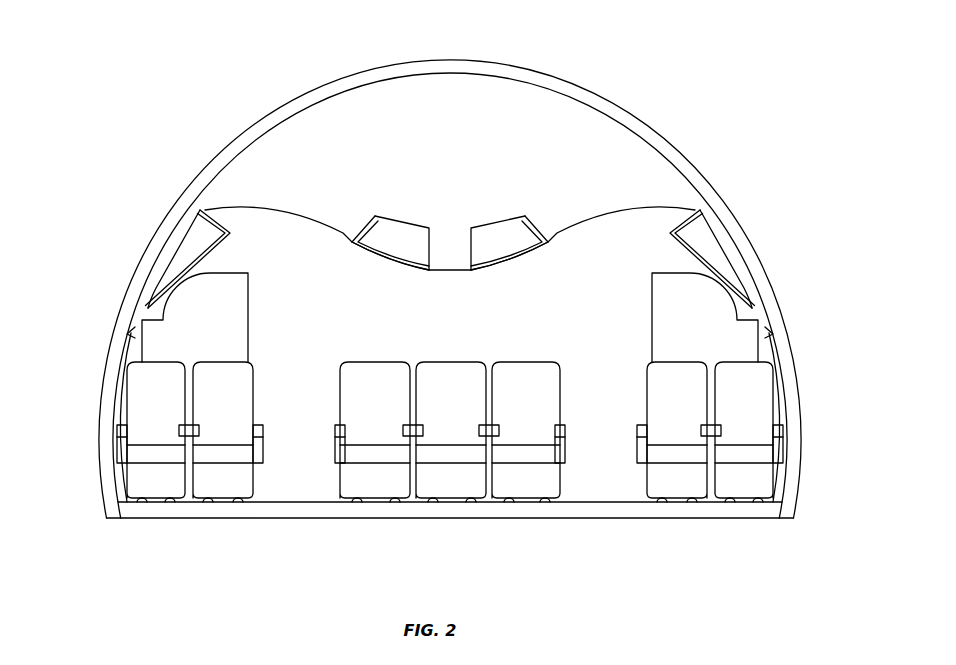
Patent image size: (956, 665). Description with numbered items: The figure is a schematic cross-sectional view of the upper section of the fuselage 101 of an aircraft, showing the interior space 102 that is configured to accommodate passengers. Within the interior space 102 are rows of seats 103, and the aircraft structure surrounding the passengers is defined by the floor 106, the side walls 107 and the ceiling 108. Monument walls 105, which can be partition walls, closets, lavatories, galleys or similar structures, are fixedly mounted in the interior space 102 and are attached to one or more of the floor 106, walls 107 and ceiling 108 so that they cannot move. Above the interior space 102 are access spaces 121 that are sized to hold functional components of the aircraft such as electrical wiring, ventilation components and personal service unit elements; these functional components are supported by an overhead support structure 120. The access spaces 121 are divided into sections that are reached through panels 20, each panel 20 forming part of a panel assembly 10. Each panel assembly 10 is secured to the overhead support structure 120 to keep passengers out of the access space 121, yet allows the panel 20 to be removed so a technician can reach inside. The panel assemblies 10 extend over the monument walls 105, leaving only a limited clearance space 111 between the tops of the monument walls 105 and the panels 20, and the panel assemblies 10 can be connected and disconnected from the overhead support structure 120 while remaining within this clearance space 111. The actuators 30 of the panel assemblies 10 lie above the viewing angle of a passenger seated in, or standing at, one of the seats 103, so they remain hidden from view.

The panel assembly 10 is at (210, 282).
The panel 20 is at (220, 252).
The actuator 30 is at (197, 212).
The fuselage 101 is at (630, 110).
The interior space 102 is at (346, 287).
The seats 103 is at (450, 420).
The monument walls 105 is at (158, 347).
The floor 106 is at (272, 512).
The walls 107 is at (128, 332).
The ceiling 108 is at (210, 207).
The clearance space 111 is at (196, 296).
The overhead support structure 120 is at (172, 248).
The access spaces 121 is at (192, 243).